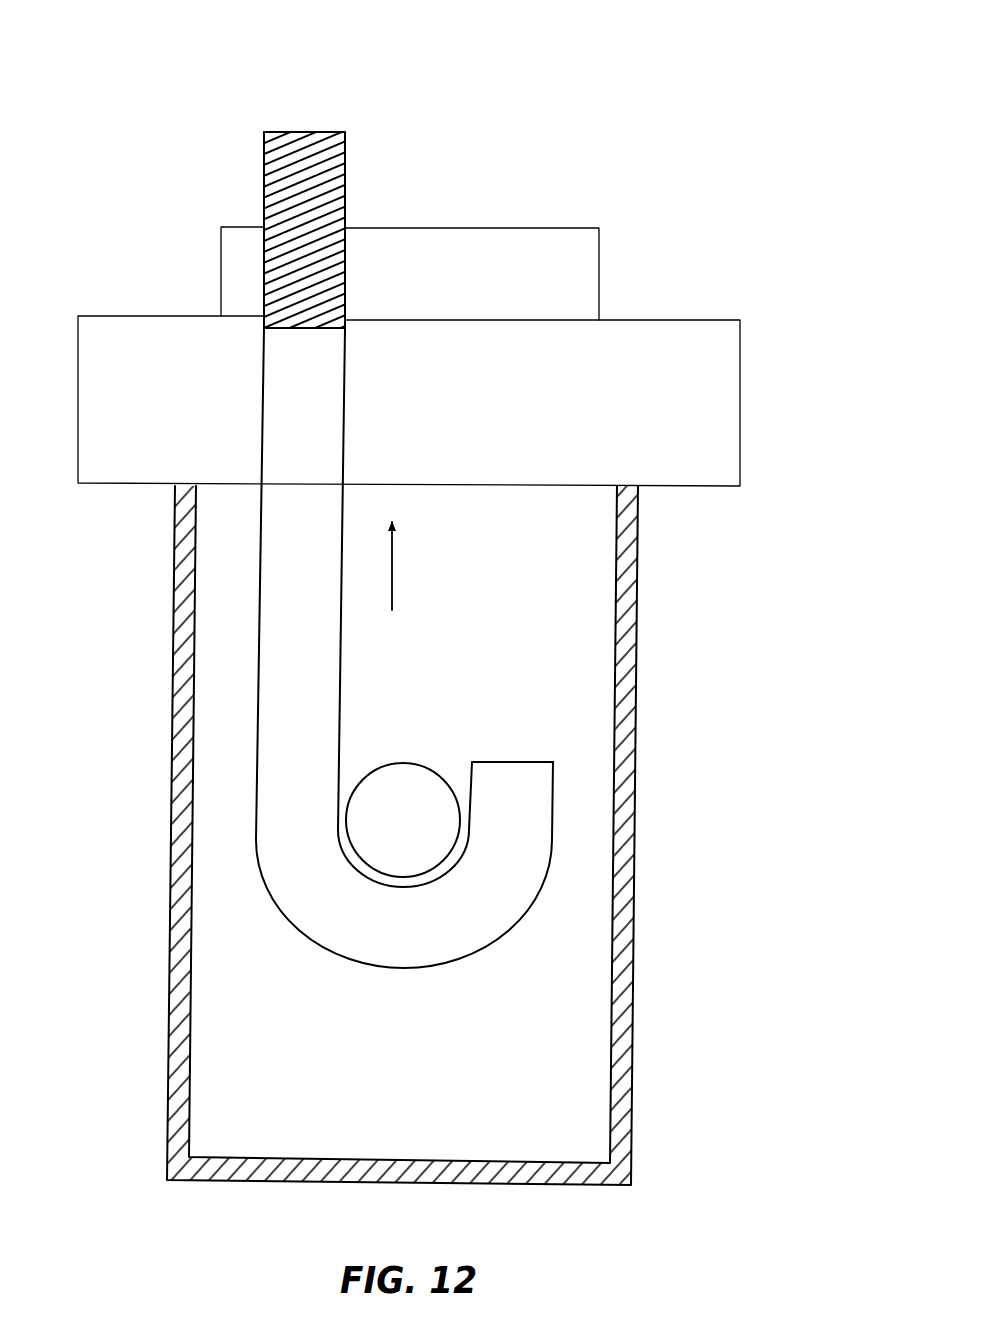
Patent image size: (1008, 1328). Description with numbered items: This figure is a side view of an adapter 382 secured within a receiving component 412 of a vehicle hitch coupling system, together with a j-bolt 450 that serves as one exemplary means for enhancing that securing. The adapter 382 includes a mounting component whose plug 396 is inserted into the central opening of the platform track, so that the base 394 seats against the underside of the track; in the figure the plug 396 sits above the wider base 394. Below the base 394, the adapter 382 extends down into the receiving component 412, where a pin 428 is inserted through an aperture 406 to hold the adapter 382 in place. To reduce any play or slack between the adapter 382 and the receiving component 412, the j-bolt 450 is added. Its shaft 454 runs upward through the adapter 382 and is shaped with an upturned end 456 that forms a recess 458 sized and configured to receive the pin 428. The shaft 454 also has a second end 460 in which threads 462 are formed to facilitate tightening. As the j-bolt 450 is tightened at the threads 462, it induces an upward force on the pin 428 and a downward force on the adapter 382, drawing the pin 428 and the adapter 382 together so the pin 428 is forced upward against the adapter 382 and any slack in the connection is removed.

The adapter 382 is at (473, 349).
The base 394 is at (712, 383).
The plug 396 is at (573, 282).
The j-bolt 450 is at (319, 170).
The second end 460 is at (263, 157).
The threads 462 is at (338, 186).
The receiving component 412 is at (632, 573).
The shaft 454 is at (288, 748).
The upturned end 456 is at (518, 783).
The pin 428 is at (415, 792).
The aperture 406 is at (408, 752).
The recess 458 is at (377, 738).